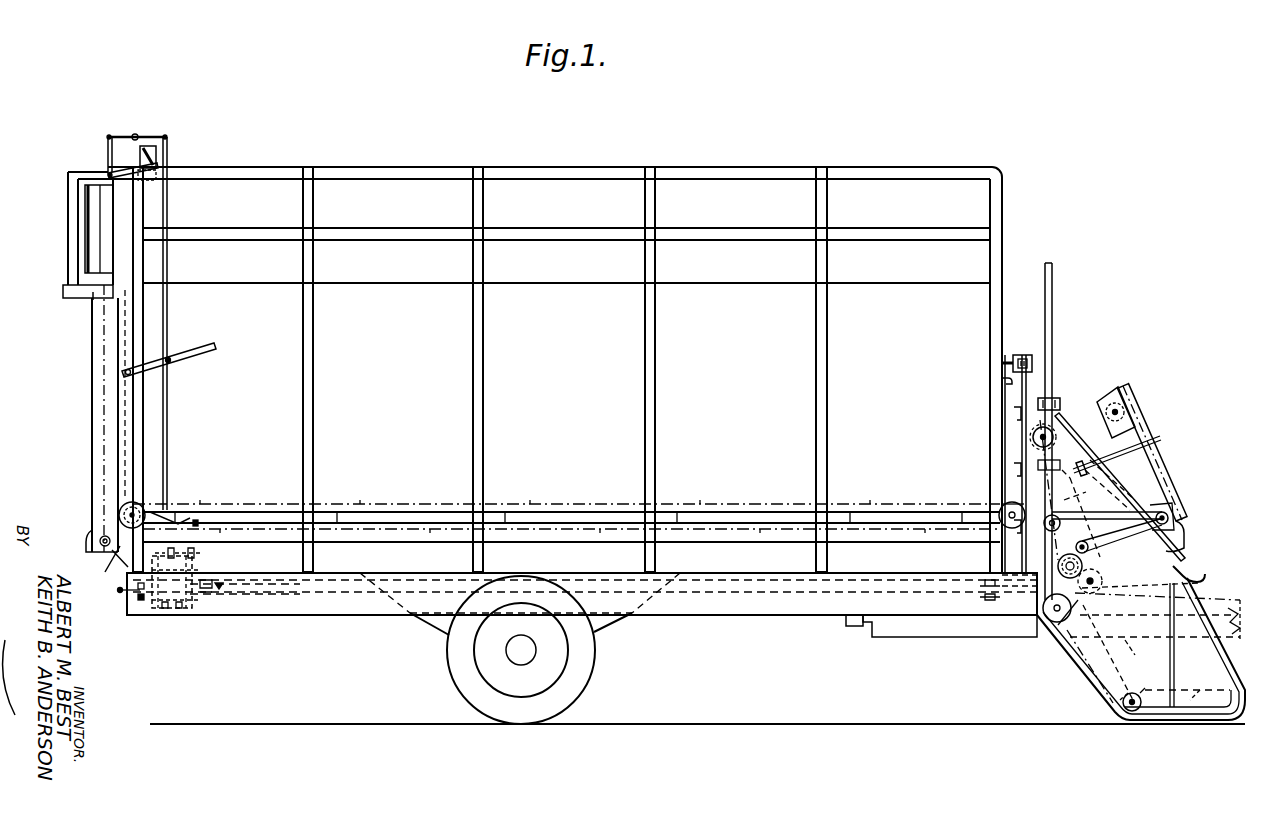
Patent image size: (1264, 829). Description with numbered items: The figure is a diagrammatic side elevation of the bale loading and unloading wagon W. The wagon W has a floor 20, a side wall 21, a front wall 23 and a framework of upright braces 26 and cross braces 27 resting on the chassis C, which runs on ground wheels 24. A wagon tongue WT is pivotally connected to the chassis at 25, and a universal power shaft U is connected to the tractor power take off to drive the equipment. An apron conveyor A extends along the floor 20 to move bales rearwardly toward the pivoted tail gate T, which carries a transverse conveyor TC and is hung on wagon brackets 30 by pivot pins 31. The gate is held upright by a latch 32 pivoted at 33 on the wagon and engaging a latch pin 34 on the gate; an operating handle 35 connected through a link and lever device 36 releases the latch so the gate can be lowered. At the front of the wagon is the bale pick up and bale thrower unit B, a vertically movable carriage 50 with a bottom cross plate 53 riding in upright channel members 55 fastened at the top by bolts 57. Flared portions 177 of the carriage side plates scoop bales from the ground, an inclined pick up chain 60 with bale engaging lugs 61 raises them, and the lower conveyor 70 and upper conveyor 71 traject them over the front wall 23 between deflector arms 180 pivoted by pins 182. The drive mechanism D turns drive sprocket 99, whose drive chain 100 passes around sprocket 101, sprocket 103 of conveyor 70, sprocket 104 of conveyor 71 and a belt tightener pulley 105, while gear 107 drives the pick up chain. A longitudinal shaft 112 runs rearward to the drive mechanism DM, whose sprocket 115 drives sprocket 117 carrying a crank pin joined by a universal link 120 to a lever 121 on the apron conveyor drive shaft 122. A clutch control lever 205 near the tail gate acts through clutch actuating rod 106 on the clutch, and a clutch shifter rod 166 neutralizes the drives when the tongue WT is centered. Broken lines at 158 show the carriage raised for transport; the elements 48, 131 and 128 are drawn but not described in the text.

The side wall 21 is at (590, 394).
The upright brace 26 is at (645, 322).
The bale loading and unloading wagon W is at (728, 161).
The floor 20 is at (578, 510).
The apron conveyor A is at (727, 497).
The cross brace 27 is at (988, 578).
The ground wheel 24 is at (594, 674).
The chassis C is at (353, 623).
The clutch shifter rod 166 is at (735, 576).
The longitudinal shaft 112 is at (724, 592).
The tongue pivot connection 25 is at (852, 628).
The wagon tongue WT is at (905, 647).
The drive mechanism DM is at (993, 609).
The transverse conveyor TC is at (75, 225).
The shaft 48 is at (96, 308).
The tail gate T is at (83, 381).
The tongue shaft 131 is at (104, 404).
The link and lever device 36 is at (170, 137).
The latch 32 is at (123, 172).
The latch pivot 33 is at (148, 168).
The latch pin 34 is at (123, 168).
The operating handle 35 is at (198, 354).
The drive shaft of apron conveyor 122 is at (128, 512).
The lever 121 is at (178, 520).
The sprocket 117 is at (192, 552).
The pivot pin 31 is at (104, 540).
The wagon bracket 30 is at (127, 573).
The pin 128 is at (125, 590).
The sprocket 115 is at (187, 606).
The universal link 120 is at (203, 556).
The clutch control lever 205 is at (212, 585).
The front wall 23 is at (1008, 381).
The upright channel member 55 is at (1032, 358).
The bolt 57 is at (1036, 368).
The deflector arm 180 is at (1052, 264).
The pin 182 is at (1066, 404).
The carriage 50 is at (1084, 416).
The bale pick up and bale thrower unit B is at (1173, 455).
The upper conveyor 71 is at (1174, 487).
The lower conveyor 70 is at (1111, 496).
The belt tightener pulley 105 is at (1018, 512).
The clutch actuating rod 106 is at (1050, 572).
The sprocket 101 is at (1101, 533).
The sprocket 104 is at (1170, 521).
The sprocket 103 is at (1092, 550).
The gear 107 is at (1100, 578).
The drive chain 100 is at (1105, 602).
The universal power shaft U is at (1231, 594).
The drive sprocket 99 is at (1051, 629).
The drive mechanism D is at (1063, 635).
The bottom cross plate 53 is at (1085, 690).
The flared portion 177 is at (1213, 666).
The pick up chain 60 is at (1128, 648).
The bale engaging lug 61 is at (1147, 690).
The raised carriage position 158 is at (1195, 695).